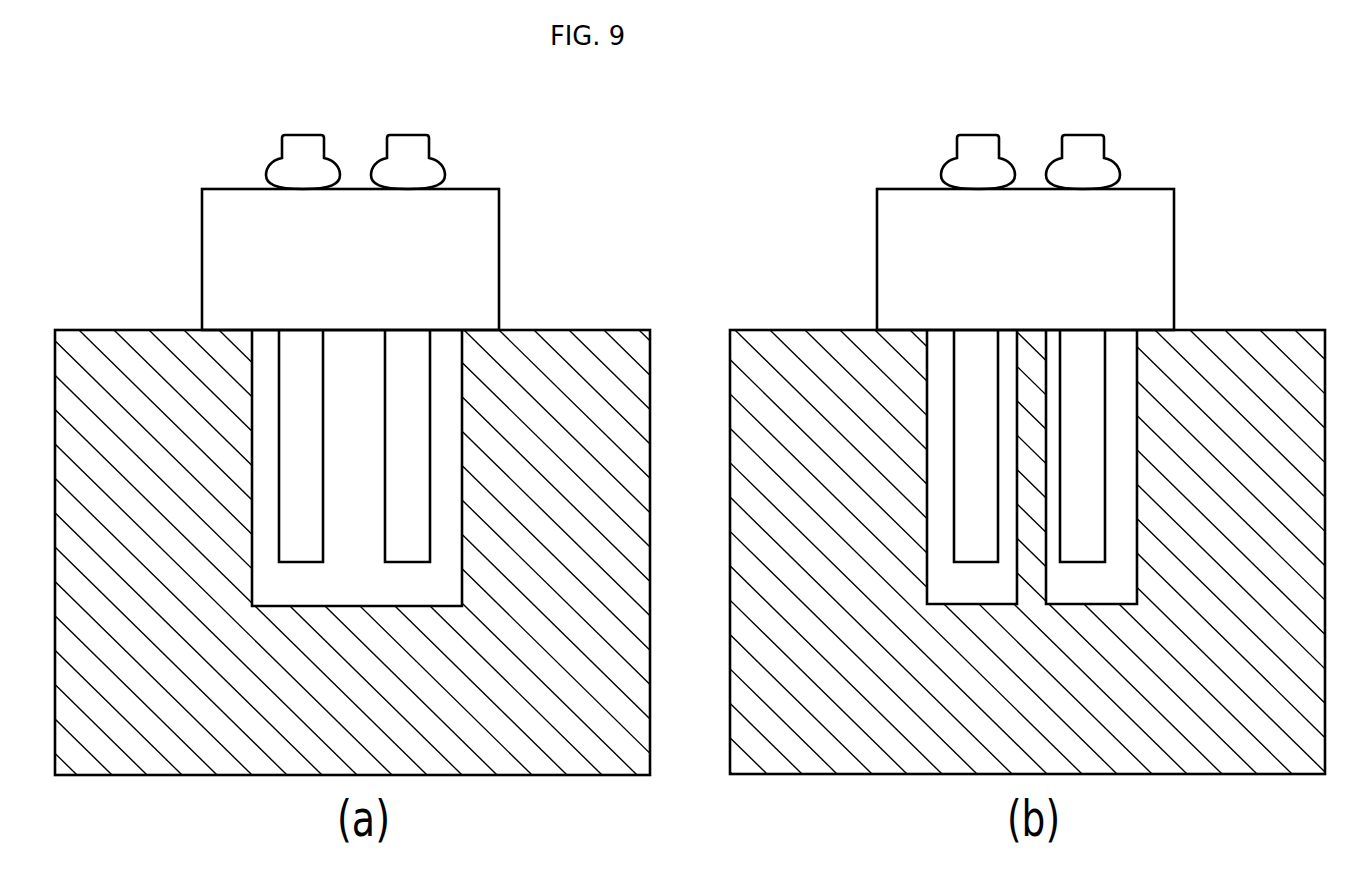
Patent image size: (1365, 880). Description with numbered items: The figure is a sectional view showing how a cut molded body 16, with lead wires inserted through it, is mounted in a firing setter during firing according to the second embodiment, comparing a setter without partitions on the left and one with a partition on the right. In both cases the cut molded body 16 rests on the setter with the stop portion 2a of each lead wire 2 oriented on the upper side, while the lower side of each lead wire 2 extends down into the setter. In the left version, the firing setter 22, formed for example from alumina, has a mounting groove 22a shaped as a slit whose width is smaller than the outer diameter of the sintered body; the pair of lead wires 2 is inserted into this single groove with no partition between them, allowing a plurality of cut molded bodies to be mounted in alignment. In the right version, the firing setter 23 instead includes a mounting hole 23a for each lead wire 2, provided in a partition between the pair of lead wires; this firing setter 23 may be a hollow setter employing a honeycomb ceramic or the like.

The lead wire 2 is at (280, 478).
The stop portion 2a is at (268, 172).
The cut molded body 16 is at (498, 238).
The firing setter 22 is at (163, 330).
The mounting groove 22a is at (420, 604).
The firing setter 23 is at (838, 330).
The mounting hole 23a is at (950, 603).